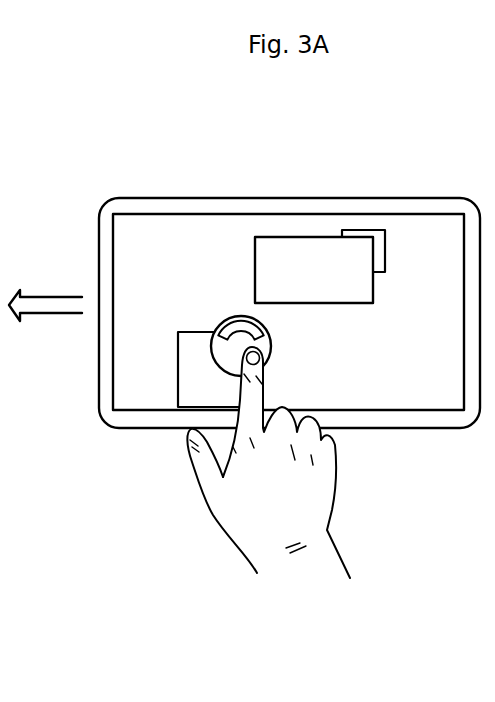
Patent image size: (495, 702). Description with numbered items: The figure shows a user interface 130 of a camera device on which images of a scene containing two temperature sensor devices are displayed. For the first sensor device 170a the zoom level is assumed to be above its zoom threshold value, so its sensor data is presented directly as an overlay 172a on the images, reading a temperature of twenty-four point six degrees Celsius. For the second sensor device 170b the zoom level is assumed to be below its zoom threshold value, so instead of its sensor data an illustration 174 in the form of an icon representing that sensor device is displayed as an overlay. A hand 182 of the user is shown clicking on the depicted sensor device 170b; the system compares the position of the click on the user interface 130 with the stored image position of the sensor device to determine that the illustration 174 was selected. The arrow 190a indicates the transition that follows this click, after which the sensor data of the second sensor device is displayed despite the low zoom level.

The user interface 130 is at (410, 429).
The sensor device 170a is at (387, 246).
The sensor device 170b is at (178, 381).
The overlay 172a is at (312, 233).
The illustration 174 is at (240, 316).
The hand 182 is at (226, 513).
The arrow 190a is at (42, 296).